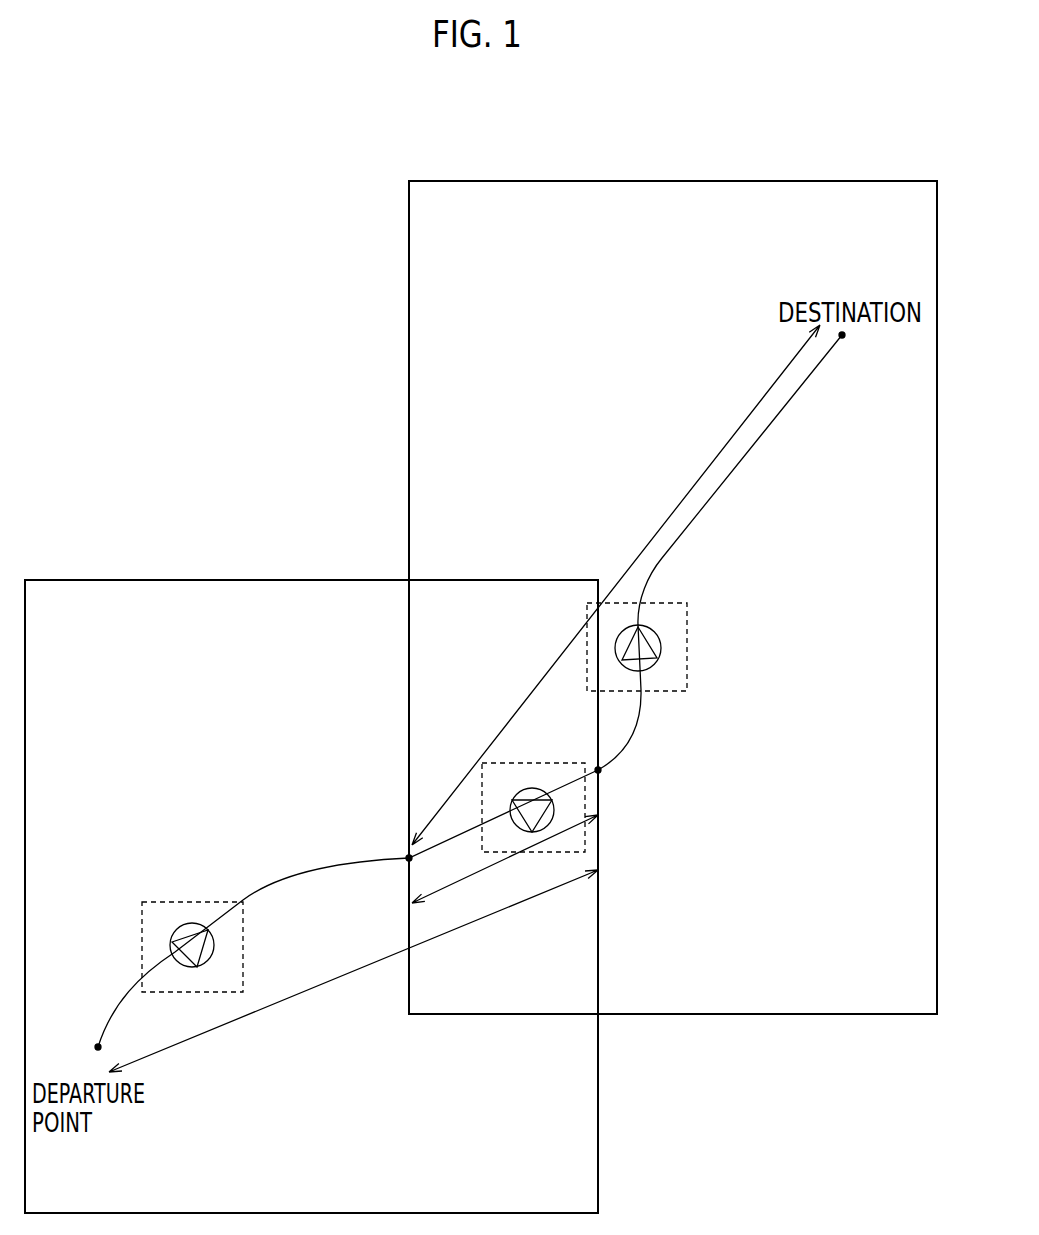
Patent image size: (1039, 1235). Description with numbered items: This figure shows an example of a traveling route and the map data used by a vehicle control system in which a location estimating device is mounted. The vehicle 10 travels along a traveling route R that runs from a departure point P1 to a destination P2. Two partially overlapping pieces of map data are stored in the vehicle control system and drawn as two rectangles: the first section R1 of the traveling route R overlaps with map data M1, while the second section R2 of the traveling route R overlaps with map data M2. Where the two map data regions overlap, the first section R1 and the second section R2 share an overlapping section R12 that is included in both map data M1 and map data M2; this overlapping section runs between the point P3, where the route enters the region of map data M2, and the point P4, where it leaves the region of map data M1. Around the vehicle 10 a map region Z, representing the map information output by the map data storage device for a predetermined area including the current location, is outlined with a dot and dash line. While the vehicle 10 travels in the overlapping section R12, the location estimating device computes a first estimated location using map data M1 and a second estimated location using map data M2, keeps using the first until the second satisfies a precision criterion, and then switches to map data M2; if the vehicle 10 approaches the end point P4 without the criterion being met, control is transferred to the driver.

The map data M1 is at (76, 579).
The map data M2 is at (765, 180).
The vehicle 10 is at (186, 922).
The map region Z is at (213, 903).
The traveling route R is at (266, 890).
The first section R1 is at (353, 971).
The second section R2 is at (616, 585).
The overlapping section R12 is at (505, 859).
The departure point P1 is at (92, 1042).
The destination P2 is at (845, 343).
The start point of the overlapping section P3 is at (405, 857).
The end point of the overlapping section P4 is at (602, 774).